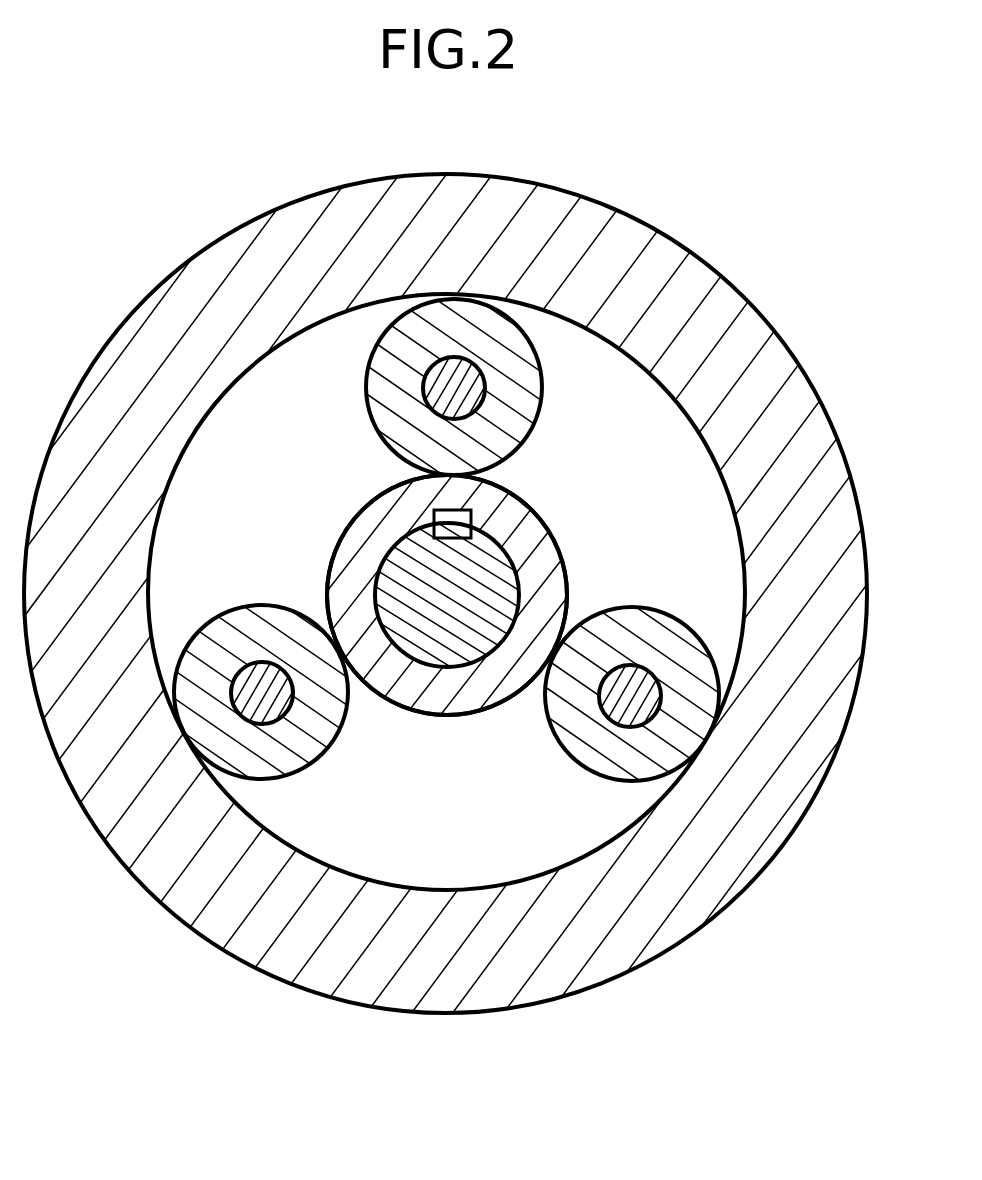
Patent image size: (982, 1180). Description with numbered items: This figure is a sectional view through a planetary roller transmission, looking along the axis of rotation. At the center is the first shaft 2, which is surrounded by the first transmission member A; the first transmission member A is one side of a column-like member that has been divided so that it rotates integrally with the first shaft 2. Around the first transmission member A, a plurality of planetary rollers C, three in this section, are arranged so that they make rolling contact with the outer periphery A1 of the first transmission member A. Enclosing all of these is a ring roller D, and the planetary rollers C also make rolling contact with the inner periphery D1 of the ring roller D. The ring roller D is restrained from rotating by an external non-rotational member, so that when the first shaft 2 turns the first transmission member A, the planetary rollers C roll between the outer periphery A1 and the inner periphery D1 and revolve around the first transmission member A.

The ring roller D is at (812, 355).
The inner periphery D1 is at (683, 417).
The first transmission member A is at (359, 646).
The outer periphery A1 is at (332, 537).
The first shaft 2 is at (418, 635).
The planetary rollers C is at (527, 432).